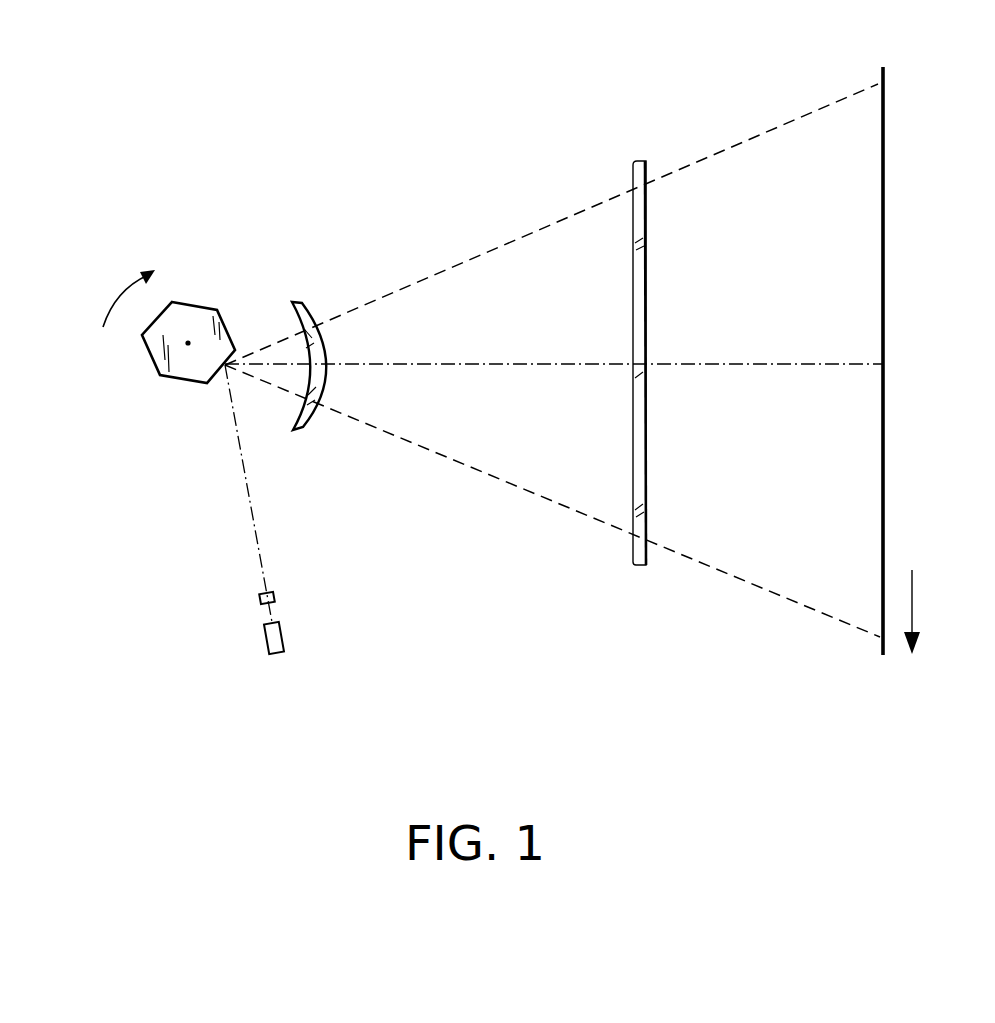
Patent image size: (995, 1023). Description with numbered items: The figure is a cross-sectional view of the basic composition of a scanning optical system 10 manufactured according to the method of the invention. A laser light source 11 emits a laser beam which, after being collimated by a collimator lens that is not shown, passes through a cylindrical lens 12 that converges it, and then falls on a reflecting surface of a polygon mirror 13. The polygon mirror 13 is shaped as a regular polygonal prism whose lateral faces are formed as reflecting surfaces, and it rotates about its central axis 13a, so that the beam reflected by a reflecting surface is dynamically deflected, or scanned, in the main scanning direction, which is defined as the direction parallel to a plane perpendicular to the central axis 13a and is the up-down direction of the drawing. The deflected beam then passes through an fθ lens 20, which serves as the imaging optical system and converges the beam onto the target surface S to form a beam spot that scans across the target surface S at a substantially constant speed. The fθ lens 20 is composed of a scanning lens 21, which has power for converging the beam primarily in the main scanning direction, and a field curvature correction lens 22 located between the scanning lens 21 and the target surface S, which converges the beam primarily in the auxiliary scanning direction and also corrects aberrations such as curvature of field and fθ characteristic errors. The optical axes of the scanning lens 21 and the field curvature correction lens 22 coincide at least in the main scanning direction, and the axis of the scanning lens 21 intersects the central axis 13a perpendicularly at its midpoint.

The scanning optical system 10 is at (88, 110).
The laser light source 11 is at (283, 633).
The cylindrical lens 12 is at (258, 598).
The polygon mirror 13 is at (150, 355).
The central axis 13a is at (188, 343).
The fθ lens 20 is at (675, 58).
The scanning lens 21 is at (292, 302).
The field curvature correction lens 22 is at (639, 160).
The target surface S is at (880, 76).